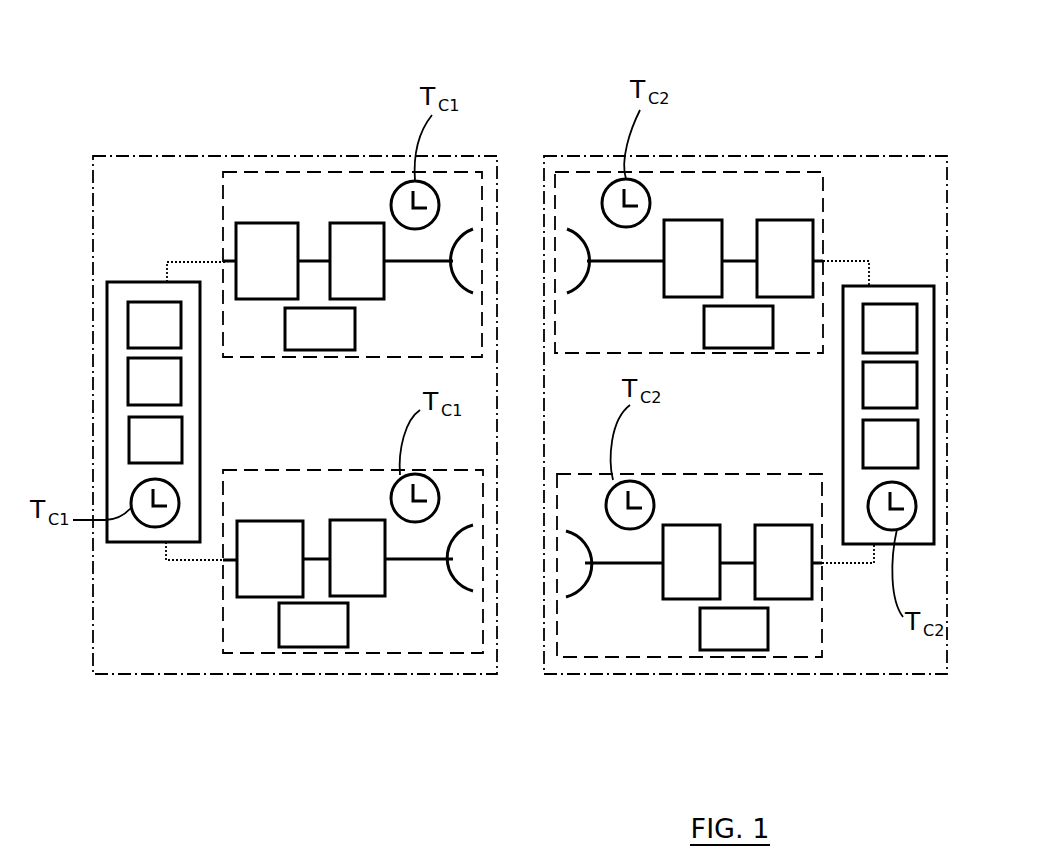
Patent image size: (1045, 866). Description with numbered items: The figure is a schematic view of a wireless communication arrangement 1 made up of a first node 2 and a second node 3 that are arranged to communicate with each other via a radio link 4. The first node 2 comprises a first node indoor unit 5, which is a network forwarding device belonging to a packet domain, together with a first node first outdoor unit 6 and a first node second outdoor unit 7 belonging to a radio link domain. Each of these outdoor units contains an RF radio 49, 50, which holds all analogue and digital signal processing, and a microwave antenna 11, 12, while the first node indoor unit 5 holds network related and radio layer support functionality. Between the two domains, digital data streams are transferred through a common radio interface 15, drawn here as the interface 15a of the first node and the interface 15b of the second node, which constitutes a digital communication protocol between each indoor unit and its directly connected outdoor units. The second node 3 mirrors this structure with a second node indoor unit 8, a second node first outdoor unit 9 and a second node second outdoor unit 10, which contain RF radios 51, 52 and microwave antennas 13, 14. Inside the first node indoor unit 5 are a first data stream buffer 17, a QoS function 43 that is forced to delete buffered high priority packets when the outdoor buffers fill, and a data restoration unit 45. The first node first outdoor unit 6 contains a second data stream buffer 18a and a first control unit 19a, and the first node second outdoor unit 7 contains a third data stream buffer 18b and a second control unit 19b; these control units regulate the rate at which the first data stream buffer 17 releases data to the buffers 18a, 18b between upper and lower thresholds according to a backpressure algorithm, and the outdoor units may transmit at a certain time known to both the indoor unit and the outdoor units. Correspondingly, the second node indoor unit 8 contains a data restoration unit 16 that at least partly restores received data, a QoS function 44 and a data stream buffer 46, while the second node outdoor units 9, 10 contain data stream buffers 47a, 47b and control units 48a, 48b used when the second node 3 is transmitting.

The wireless communication arrangement 1 is at (256, 60).
The first node 2 is at (157, 156).
The second node 3 is at (767, 674).
The radio link 4 is at (516, 645).
The first node indoor unit 5 is at (132, 542).
The first node first outdoor unit 6 is at (283, 172).
The first node second outdoor unit 7 is at (333, 470).
The second node indoor unit 8 is at (893, 286).
The second node first outdoor unit 9 is at (677, 172).
The second node second outdoor unit 10 is at (655, 474).
The microwave antenna 11 is at (471, 226).
The microwave antenna 12 is at (459, 591).
The microwave antenna 13 is at (568, 226).
The microwave antenna 14 is at (566, 597).
The common radio interface 15 is at (192, 262).
The common radio interface 15a is at (182, 560).
The common radio interface 15b is at (860, 563).
The data restoration unit 16 is at (905, 400).
The first data stream buffer 17 is at (169, 340).
The second data stream buffer 18a is at (287, 275).
The third data stream buffer 18b is at (290, 573).
The first control unit 19a is at (340, 343).
The second control unit 19b is at (333, 639).
The QoS function 43 is at (169, 397).
The QoS function 44 is at (905, 343).
The data restoration unit 45 is at (170, 455).
The data stream buffer 46 is at (905, 459).
The data stream buffer 47a is at (805, 273).
The data stream buffer 47b is at (804, 576).
The control unit 48a is at (758, 341).
The control unit 48b is at (754, 643).
The RF radio 49 is at (372, 275).
The RF radio 50 is at (372, 572).
The RF radio 51 is at (708, 273).
The RF radio 52 is at (706, 576).